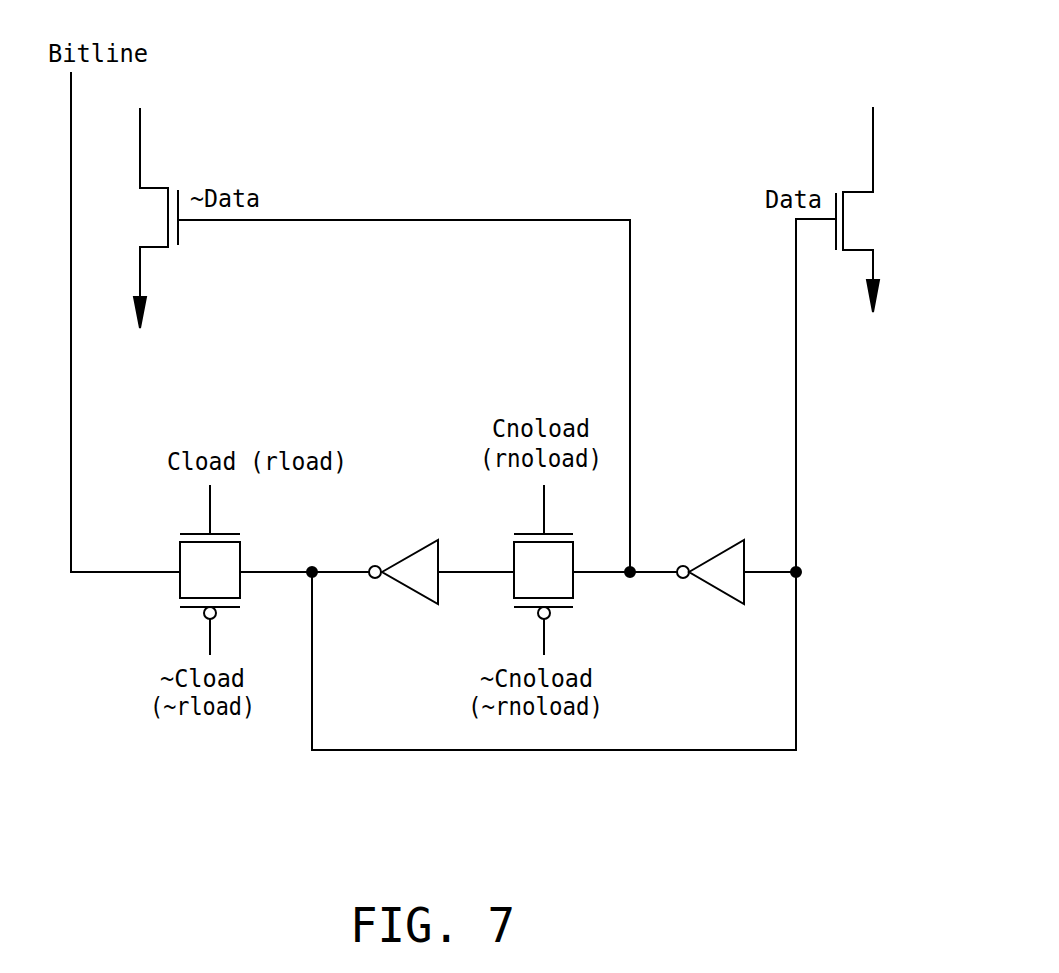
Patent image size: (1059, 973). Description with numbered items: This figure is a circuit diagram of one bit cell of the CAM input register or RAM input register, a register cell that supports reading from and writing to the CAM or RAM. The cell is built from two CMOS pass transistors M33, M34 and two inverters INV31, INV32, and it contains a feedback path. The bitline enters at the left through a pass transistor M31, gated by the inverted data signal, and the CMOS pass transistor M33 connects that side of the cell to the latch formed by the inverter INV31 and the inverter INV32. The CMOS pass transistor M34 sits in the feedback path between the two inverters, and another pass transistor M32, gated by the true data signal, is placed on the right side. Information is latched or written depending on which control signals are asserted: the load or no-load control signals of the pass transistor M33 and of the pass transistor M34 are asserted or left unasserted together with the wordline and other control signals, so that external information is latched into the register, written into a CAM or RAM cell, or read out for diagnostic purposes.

The pass transistor M31 is at (140, 218).
The pass transistor M32 is at (864, 209).
The CMOS pass transistor M33 is at (210, 570).
The CMOS pass transistor M34 is at (543, 570).
The inverter INV31 is at (393, 580).
The inverter INV32 is at (698, 580).